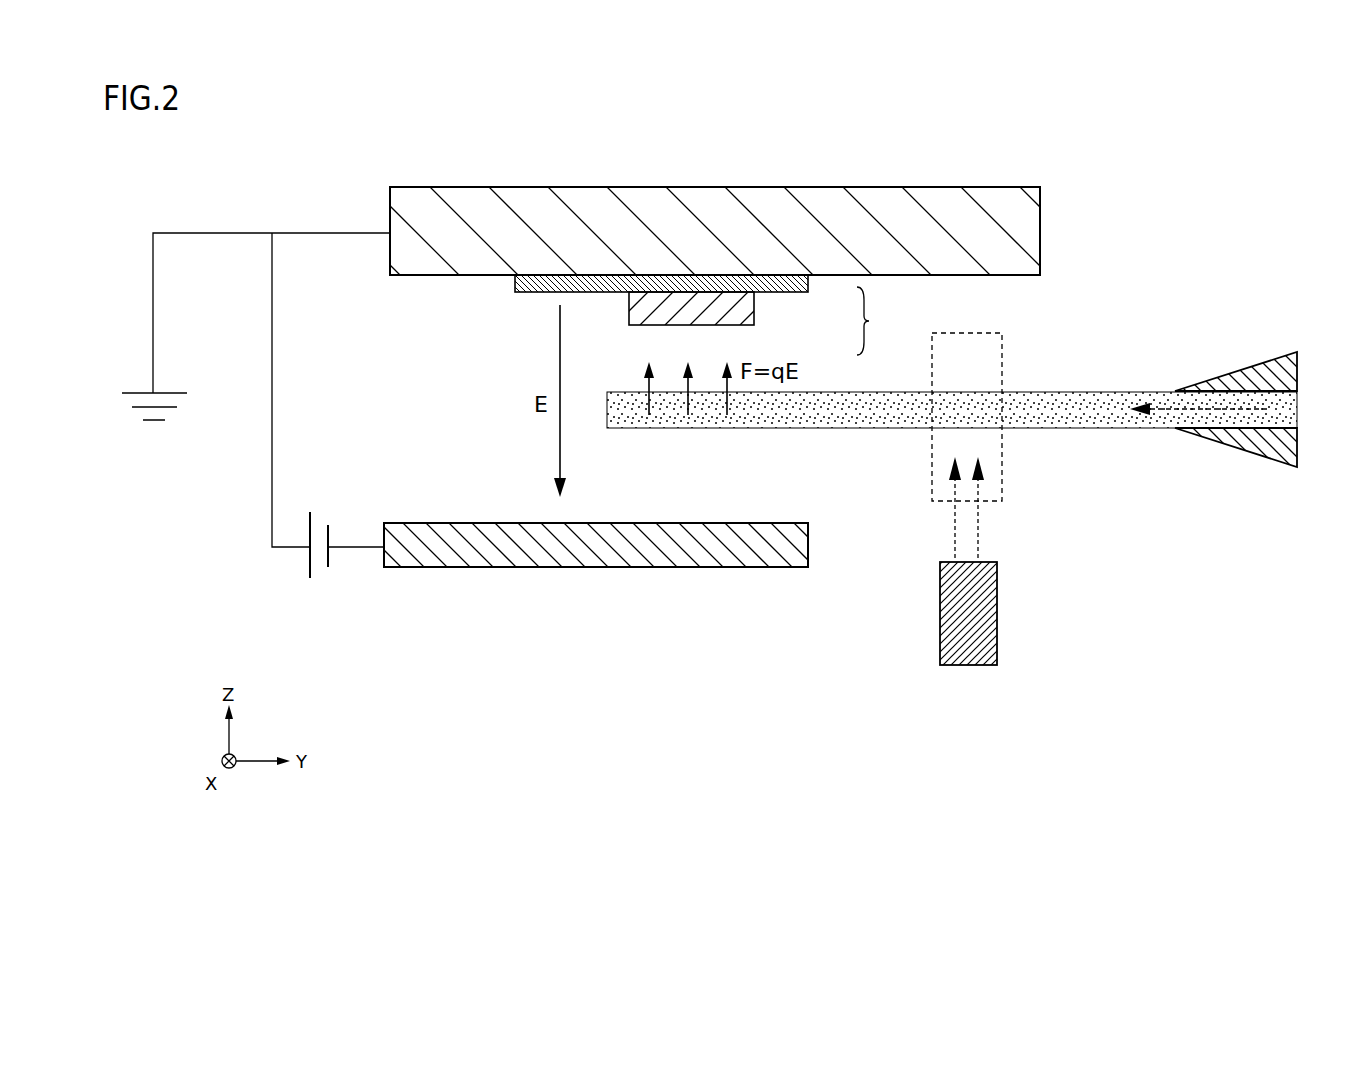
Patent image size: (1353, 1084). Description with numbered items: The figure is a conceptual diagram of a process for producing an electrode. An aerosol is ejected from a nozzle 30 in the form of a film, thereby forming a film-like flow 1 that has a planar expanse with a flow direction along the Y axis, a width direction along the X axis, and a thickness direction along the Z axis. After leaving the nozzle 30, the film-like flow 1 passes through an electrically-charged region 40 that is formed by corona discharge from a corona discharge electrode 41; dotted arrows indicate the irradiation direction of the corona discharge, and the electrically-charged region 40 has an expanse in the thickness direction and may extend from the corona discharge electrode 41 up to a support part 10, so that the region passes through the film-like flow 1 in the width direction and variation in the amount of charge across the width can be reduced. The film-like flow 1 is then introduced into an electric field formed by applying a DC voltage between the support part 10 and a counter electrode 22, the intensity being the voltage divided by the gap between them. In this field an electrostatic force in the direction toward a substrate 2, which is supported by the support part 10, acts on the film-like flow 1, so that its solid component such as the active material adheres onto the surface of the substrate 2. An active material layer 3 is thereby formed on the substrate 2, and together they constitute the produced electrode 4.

The film-like flow 1 is at (1083, 398).
The substrate 2 is at (808, 287).
The active material layer 3 is at (754, 308).
The electrode 4 is at (871, 321).
The support part 10 is at (661, 187).
The counter electrode 22 is at (677, 567).
The nozzle 30 is at (1240, 368).
The electrically-charged region 40 is at (965, 340).
The corona discharge electrode 41 is at (970, 665).